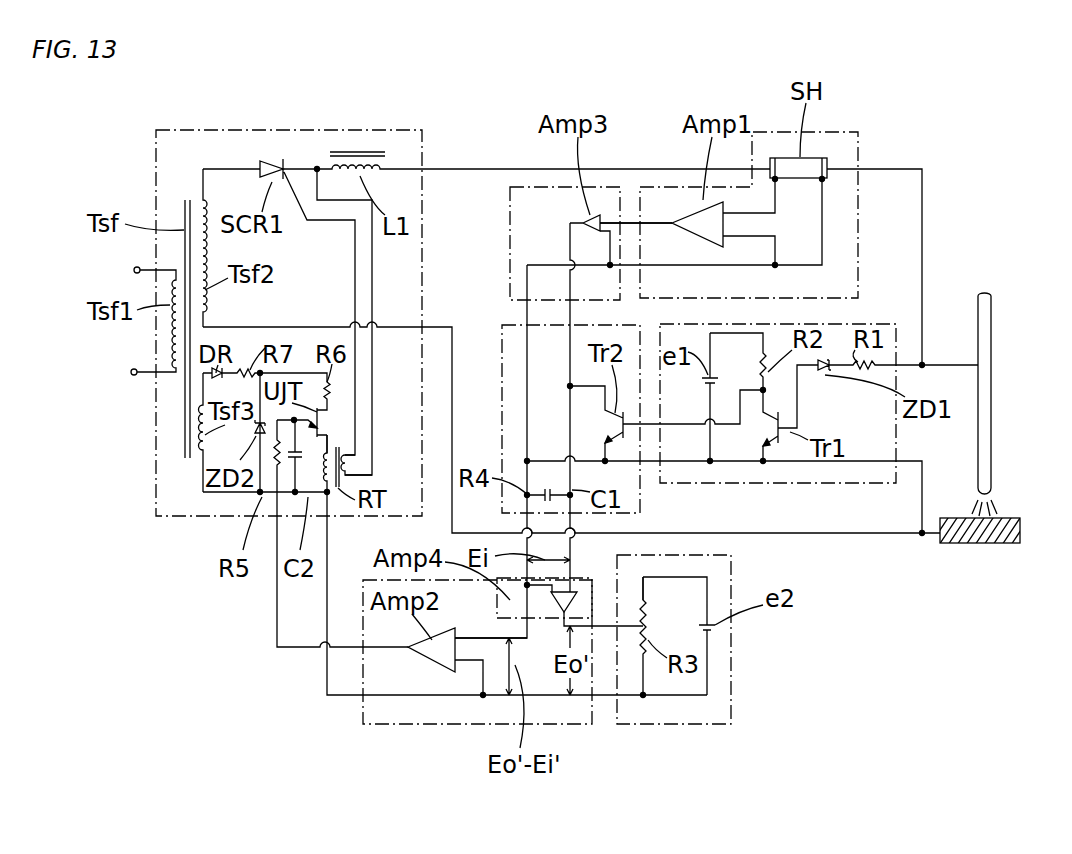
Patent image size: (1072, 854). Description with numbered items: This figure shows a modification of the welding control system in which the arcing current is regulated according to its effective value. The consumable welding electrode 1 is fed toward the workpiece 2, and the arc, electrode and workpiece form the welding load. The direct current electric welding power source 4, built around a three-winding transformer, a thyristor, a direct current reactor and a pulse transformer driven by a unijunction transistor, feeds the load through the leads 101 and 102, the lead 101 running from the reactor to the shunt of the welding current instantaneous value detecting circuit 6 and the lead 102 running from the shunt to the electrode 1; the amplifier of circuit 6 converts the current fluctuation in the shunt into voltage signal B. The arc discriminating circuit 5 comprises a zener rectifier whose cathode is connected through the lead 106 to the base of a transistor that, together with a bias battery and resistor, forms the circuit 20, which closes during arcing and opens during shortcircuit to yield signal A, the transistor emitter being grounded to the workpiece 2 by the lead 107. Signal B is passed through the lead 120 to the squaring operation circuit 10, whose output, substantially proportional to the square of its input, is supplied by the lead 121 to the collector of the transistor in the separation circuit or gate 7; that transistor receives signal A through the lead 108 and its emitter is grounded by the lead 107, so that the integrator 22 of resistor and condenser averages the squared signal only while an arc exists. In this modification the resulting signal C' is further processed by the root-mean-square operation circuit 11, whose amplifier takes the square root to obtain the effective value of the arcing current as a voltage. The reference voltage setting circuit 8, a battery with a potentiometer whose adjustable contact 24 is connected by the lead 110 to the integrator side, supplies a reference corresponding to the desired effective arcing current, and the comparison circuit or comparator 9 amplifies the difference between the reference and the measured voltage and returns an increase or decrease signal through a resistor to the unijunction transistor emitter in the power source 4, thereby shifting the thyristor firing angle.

The consumable welding electrode 1 is at (991, 400).
The workpiece 2 is at (982, 544).
The direct current electric welding power source 4 is at (192, 517).
The arc discriminating circuit 5 is at (805, 483).
The welding current instantaneous value detecting circuit 6 is at (858, 212).
The separation circuit or gate 7 is at (640, 498).
The reference voltage setting circuit 8 is at (731, 655).
The comparison circuit or comparator 9 is at (363, 710).
The squaring operation circuit 10 is at (510, 250).
The root-mean-square operation circuit 11 is at (580, 580).
The circuit 20 is at (735, 333).
The integrator 22 is at (519, 474).
The variable resistor tap 24 is at (646, 608).
The lead 101 is at (480, 169).
The lead 102 is at (888, 169).
The lead 106 is at (797, 398).
The lead 107 is at (922, 495).
The lead 108 is at (708, 424).
The lead 110 is at (605, 628).
The lead 120 is at (630, 223).
The lead 121 is at (570, 312).